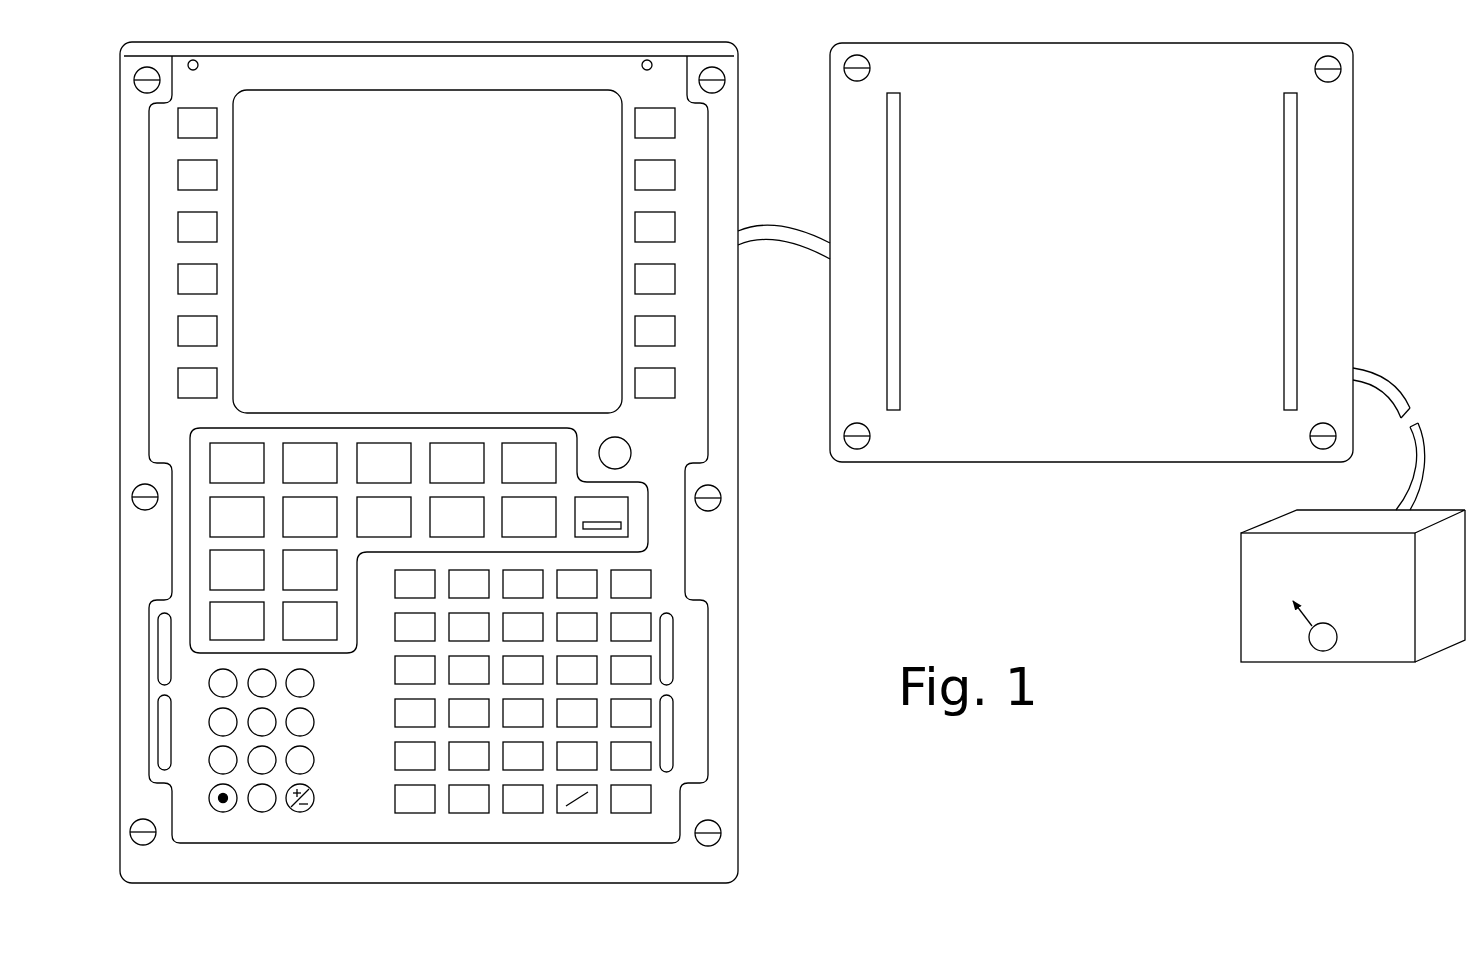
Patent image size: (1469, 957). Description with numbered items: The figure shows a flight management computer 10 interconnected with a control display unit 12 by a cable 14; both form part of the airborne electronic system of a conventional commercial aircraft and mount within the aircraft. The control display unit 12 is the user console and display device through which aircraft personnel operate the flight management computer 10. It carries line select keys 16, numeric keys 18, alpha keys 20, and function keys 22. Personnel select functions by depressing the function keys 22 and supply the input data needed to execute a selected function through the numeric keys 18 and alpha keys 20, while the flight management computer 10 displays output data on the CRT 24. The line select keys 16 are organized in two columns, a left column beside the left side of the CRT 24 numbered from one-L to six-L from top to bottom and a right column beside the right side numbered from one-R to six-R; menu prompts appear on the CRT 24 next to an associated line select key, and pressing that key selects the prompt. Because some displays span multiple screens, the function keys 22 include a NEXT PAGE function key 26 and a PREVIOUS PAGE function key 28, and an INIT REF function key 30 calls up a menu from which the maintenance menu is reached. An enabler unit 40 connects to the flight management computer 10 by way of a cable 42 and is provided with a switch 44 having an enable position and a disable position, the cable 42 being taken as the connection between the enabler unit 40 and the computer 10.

The flight management computer 10 is at (1353, 138).
The control display unit 12 is at (434, 462).
The cable 14 is at (787, 248).
The line select keys 16 is at (146, 171).
The numeric keys 18 is at (271, 825).
The alpha keys 20 is at (370, 767).
The function keys 22 is at (155, 551).
The CRT 24 is at (438, 265).
The NEXT PAGE function key 26 is at (338, 622).
The PREVIOUS PAGE function key 28 is at (211, 607).
The INIT REF function key 30 is at (361, 564).
The enabler unit 40 is at (1351, 597).
The cable 42 is at (1393, 390).
The switch 44 is at (1312, 662).